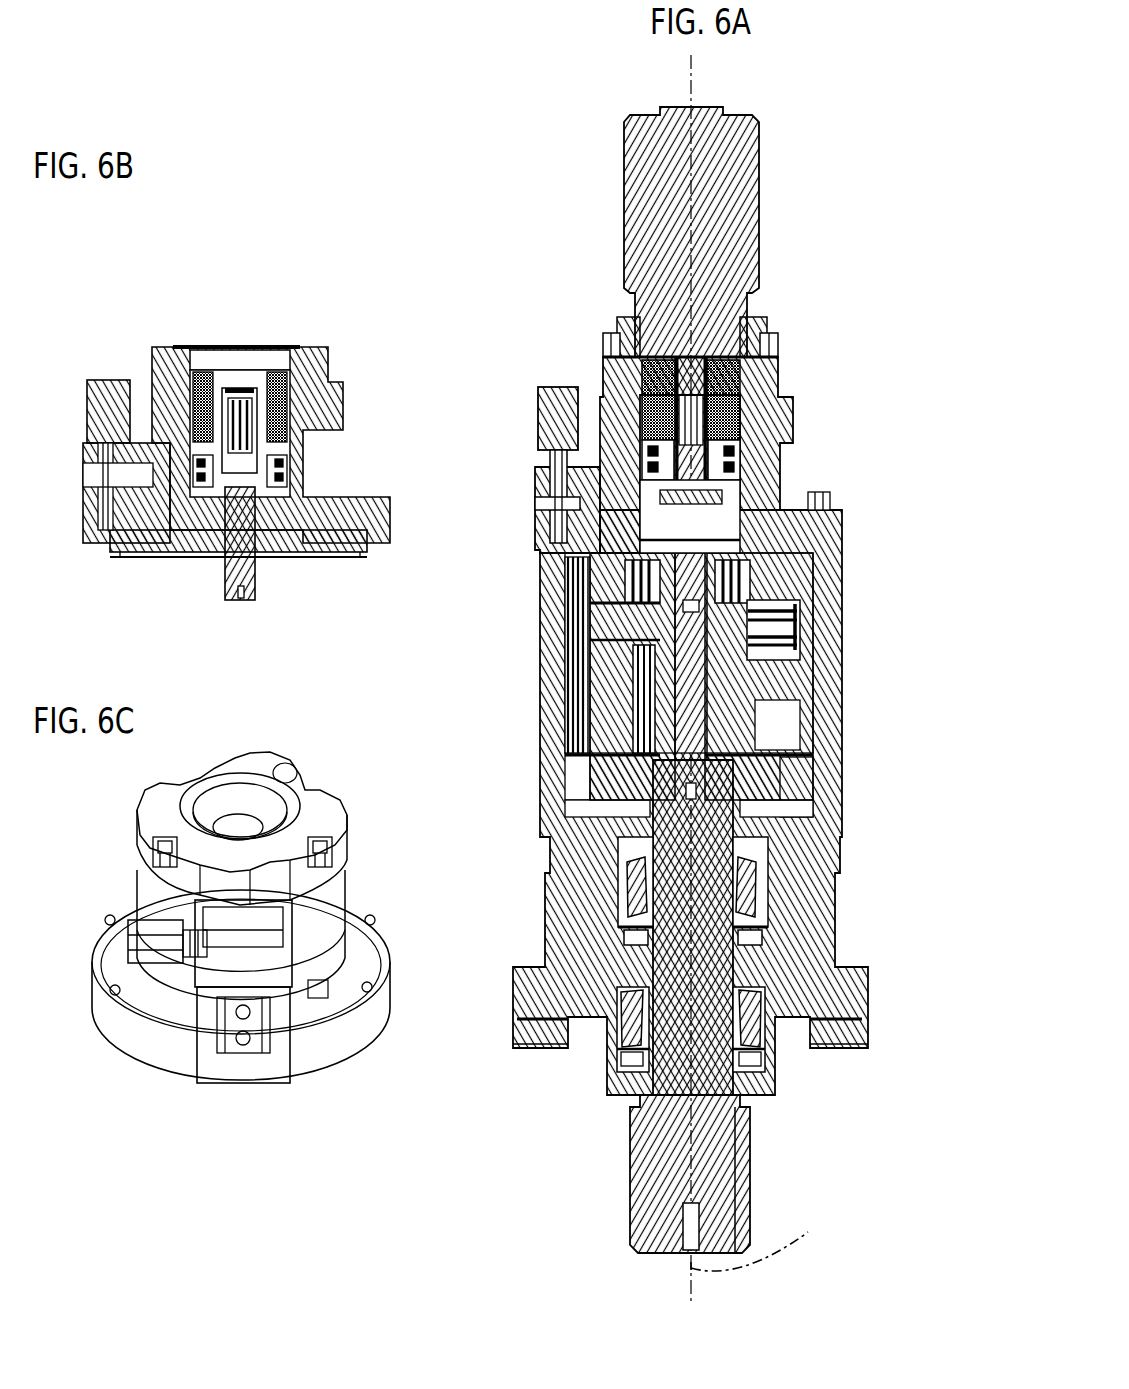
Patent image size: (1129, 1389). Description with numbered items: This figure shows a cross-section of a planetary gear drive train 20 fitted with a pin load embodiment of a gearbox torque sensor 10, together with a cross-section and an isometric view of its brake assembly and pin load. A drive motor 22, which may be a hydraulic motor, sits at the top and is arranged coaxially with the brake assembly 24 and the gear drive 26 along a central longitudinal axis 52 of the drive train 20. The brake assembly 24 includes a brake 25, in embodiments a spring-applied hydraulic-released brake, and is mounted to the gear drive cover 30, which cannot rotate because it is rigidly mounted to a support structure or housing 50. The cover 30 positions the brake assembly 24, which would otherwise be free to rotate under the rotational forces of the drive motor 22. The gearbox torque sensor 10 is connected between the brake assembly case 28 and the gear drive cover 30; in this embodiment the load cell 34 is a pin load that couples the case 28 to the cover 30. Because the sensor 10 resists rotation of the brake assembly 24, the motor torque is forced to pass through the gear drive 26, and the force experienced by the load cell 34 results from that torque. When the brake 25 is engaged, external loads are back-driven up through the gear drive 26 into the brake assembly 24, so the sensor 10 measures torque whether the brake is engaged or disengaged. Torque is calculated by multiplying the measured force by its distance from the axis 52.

In FIG. 6A, the gearbox torque sensor 10 is at (686, 680).
In FIG. 6A, the drive train 20 is at (646, 672).
In FIG. 6A, the drive motor 22 is at (745, 180).
In FIG. 6B, the brake assembly 24 is at (200, 500).
In FIG. 6A, the brake 25 is at (738, 409).
In FIG. 6A, the gear drive 26 is at (710, 720).
In FIG. 6A, the brake assembly case 28 is at (597, 450).
In FIG. 6A, the gear drive cover 30 is at (778, 502).
In FIG. 6A, the load cell 34 is at (553, 473).
In FIG. 6A, the support structure or housing 50 is at (553, 703).
In FIG. 6A, the central longitudinal axis 52 is at (771, 1230).